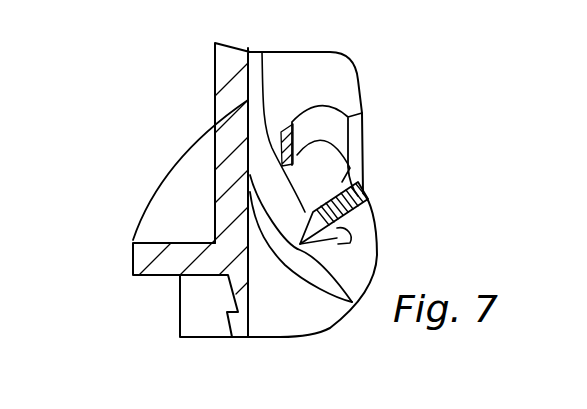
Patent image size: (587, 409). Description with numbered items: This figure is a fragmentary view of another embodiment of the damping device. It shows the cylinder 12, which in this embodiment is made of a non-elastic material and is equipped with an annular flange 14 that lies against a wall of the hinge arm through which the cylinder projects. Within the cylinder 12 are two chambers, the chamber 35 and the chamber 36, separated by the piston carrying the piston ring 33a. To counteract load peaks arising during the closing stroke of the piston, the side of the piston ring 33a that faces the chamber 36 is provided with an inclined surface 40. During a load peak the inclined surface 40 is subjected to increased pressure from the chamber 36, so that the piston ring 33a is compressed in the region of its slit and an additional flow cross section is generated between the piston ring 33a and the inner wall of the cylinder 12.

The cylinder 12 is at (227, 73).
The annular flange 14 is at (150, 252).
The chamber 35 is at (273, 320).
The chamber 36 is at (265, 70).
The inclined surface 40 is at (270, 182).
The piston ring 33a is at (360, 184).